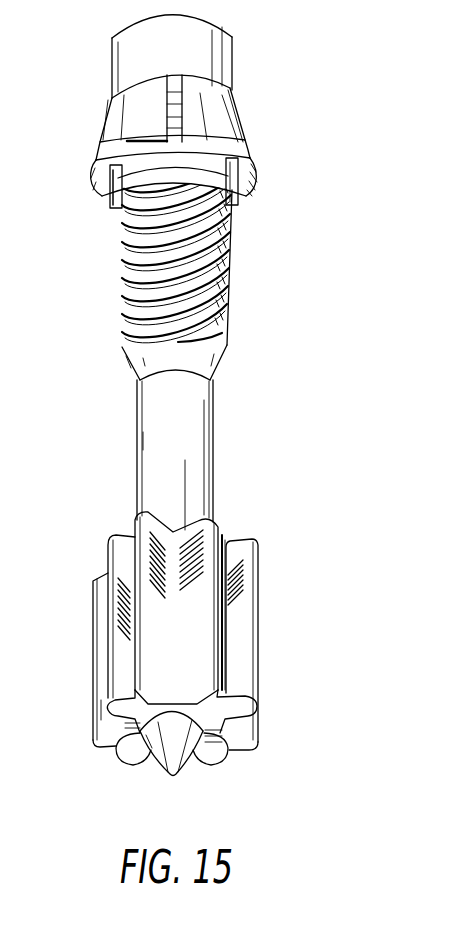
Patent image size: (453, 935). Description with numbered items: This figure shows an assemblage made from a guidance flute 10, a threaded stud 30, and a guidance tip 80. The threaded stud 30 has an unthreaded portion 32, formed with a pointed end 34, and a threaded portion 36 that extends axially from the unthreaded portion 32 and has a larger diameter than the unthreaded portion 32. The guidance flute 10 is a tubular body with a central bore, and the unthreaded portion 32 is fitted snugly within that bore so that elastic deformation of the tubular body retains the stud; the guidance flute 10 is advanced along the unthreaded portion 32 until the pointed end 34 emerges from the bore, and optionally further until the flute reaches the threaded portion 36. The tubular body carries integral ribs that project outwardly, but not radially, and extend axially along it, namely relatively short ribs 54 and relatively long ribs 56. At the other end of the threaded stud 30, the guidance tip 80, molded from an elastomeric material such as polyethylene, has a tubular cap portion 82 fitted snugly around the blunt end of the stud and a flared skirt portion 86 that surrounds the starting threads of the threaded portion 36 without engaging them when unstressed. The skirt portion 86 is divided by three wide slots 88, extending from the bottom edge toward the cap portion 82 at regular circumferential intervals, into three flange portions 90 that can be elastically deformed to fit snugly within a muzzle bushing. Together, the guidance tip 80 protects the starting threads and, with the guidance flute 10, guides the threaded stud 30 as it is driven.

The guidance flute 10 is at (173, 648).
The threaded stud 30 is at (217, 344).
The unthreaded portion 32 is at (206, 463).
The pointed end 34 is at (168, 758).
The threaded portion 36 is at (238, 228).
The relatively short ribs 54 is at (219, 530).
The relatively long ribs 56 is at (136, 518).
The guidance tip 80 is at (172, 143).
The cap portion 82 is at (225, 67).
The skirt portion 86 is at (240, 132).
The wide slots 88 is at (180, 73).
The flange portions 90 is at (252, 170).